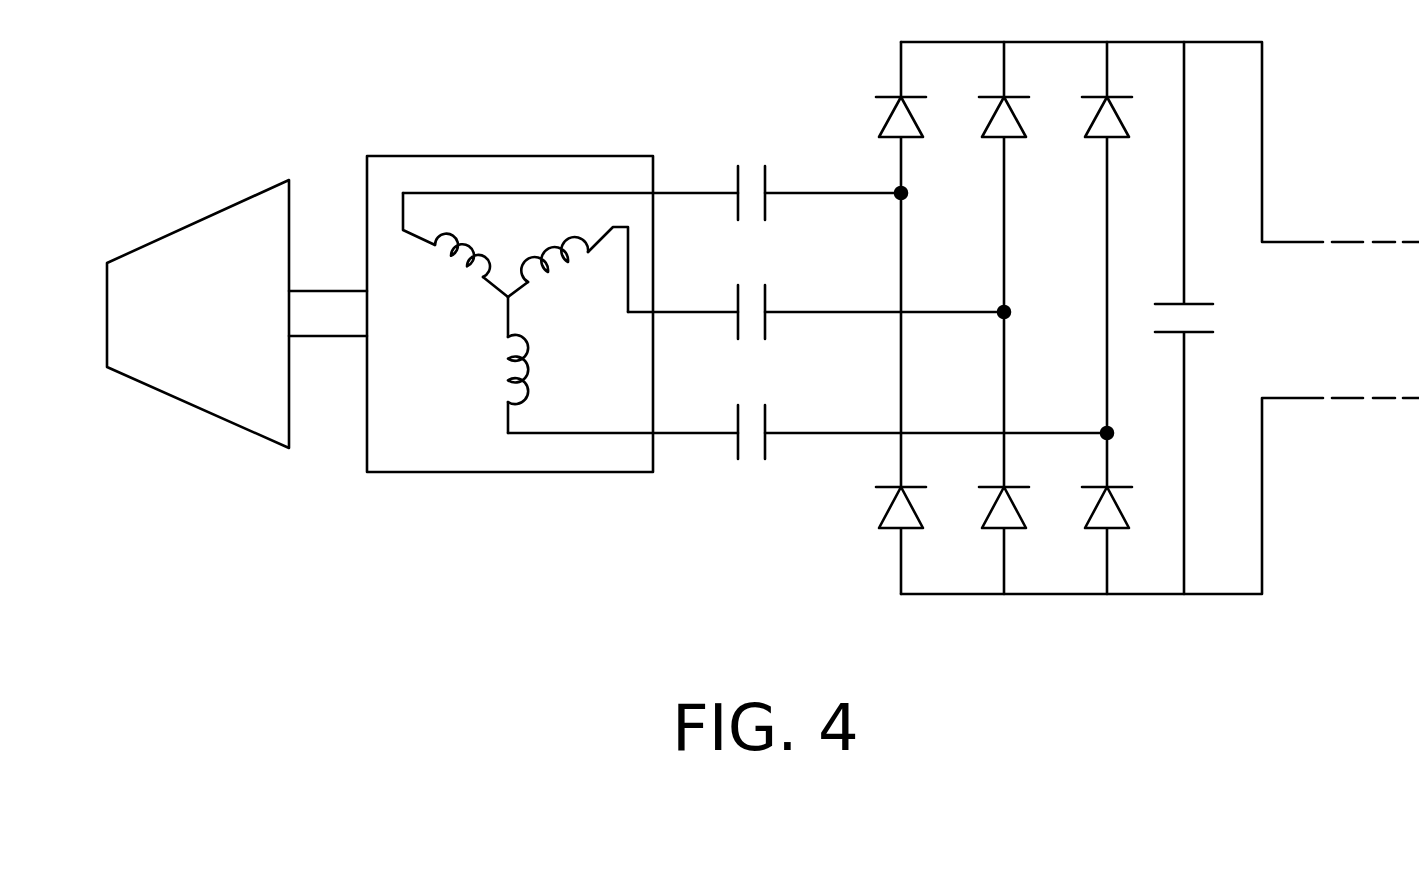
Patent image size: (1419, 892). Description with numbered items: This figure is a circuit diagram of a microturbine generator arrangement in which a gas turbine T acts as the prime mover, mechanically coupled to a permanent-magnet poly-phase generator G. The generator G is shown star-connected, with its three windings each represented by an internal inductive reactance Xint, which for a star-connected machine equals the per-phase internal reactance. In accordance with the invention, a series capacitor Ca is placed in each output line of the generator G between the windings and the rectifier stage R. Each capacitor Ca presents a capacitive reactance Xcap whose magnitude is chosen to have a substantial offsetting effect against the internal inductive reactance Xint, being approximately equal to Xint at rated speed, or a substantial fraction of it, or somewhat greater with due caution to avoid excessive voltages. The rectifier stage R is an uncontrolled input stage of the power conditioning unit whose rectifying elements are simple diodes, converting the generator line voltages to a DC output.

The gas turbine T is at (237, 314).
The generator G is at (510, 276).
The internal inductive reactance Xint is at (506, 313).
The series capacitors Ca is at (892, 311).
The capacitive reactance Xcap is at (803, 254).
The rectifier stage R is at (1262, 613).